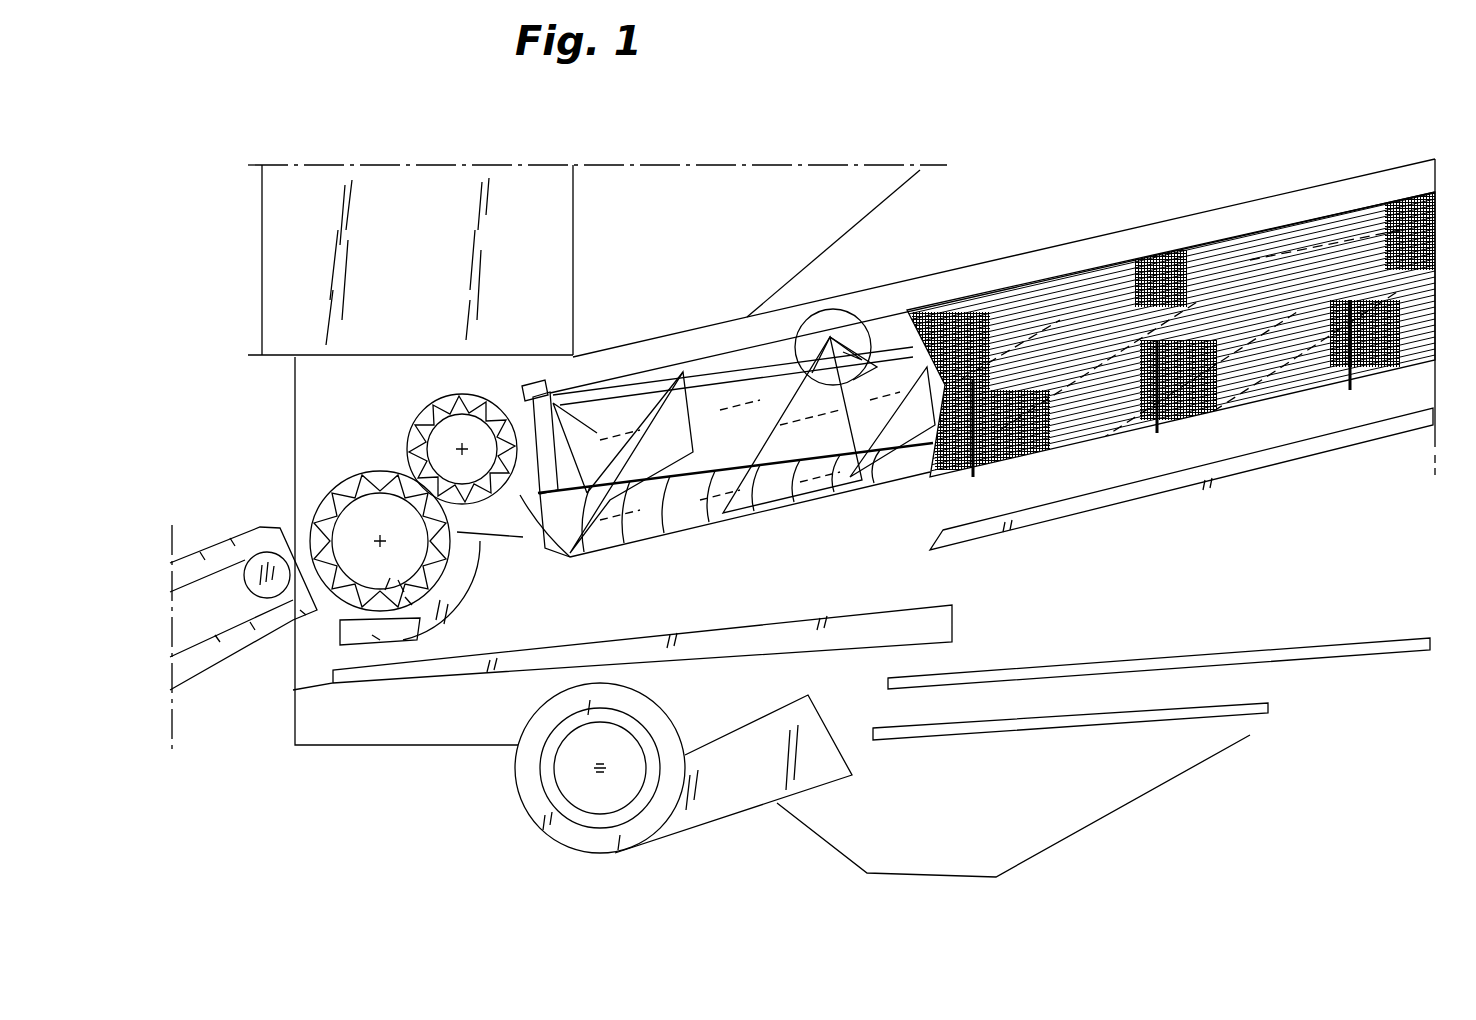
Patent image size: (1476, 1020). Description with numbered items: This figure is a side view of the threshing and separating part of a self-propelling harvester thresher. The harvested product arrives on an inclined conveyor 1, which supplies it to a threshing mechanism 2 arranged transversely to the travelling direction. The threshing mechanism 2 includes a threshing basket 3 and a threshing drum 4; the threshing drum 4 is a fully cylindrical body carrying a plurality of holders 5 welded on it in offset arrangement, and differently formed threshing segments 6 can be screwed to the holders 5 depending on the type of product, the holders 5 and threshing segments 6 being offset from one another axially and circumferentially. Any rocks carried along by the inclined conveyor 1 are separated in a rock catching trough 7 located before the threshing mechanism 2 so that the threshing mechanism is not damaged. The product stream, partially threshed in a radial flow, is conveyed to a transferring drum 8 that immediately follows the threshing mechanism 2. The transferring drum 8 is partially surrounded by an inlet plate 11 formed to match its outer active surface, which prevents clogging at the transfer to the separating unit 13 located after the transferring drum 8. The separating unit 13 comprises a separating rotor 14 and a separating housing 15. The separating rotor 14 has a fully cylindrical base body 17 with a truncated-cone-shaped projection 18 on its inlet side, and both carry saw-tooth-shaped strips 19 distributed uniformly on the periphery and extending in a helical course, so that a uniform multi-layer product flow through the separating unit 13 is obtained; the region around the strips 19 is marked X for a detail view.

The inclined conveyor 1 is at (212, 566).
The threshing mechanism 2 is at (348, 472).
The threshing basket 3 is at (390, 580).
The threshing drum 4 is at (372, 635).
The holders 5 is at (398, 580).
The threshing segments 6 is at (405, 597).
The rock catching trough 7 is at (297, 665).
The transferring drum 8 is at (473, 423).
The inlet plate 11 is at (524, 540).
The separating unit 13 is at (883, 493).
The separating rotor 14 is at (780, 463).
The separating housing 15 is at (692, 527).
The base body 17 is at (760, 390).
The truncated-cone-shaped projection 18 is at (623, 445).
The saw-tooth-shaped strips 19 is at (852, 312).
The detail region X is at (862, 318).